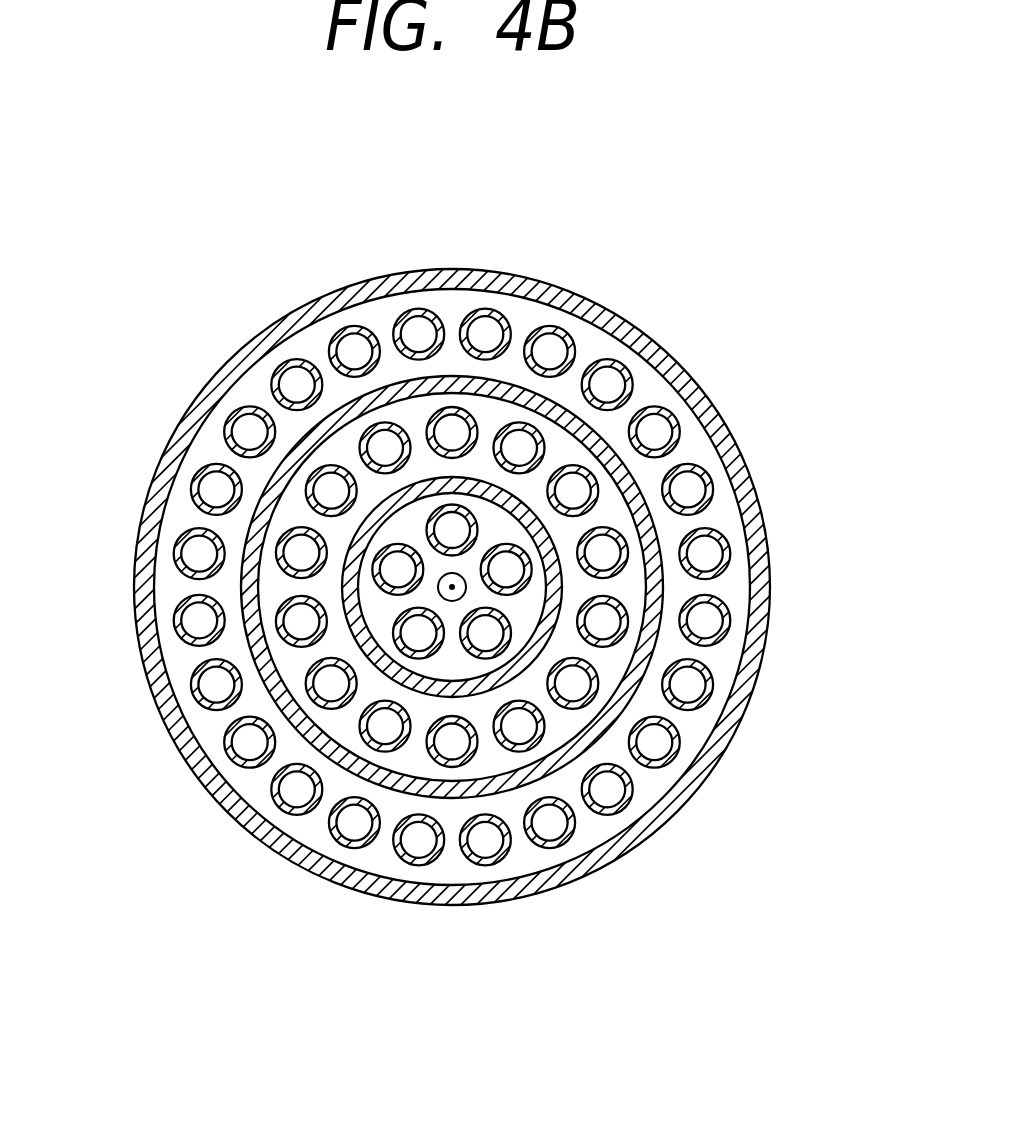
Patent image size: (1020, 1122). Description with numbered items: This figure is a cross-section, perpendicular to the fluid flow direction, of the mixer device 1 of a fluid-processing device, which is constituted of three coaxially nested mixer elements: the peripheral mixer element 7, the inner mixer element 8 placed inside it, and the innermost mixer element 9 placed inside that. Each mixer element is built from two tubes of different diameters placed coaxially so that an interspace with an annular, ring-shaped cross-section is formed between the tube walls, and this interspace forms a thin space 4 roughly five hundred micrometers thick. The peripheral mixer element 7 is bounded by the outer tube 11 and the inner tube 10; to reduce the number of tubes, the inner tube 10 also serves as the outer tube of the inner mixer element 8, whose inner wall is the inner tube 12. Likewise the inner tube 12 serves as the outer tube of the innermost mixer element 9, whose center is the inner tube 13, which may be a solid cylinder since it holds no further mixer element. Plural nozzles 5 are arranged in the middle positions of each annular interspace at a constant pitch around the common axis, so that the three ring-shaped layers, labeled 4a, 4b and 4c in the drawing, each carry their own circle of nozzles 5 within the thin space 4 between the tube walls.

The mixer device 1 is at (677, 296).
The thin space 4 is at (857, 405).
The outer tube layer 4a is at (717, 583).
The middle tube layer 4b is at (593, 513).
The inner tube layer 4c is at (492, 528).
The nozzle 5 is at (284, 815).
The peripheral mixer element 7 is at (592, 822).
The inner mixer element 8 is at (560, 720).
The innermost mixer element 9 is at (520, 612).
The inner tube of the peripheral mixer element 10 is at (300, 453).
The outer tube of the peripheral mixer element 11 is at (280, 327).
The inner tube of the inner mixer element 12 is at (352, 590).
The inner tube of the innermost mixer element 13 is at (452, 588).